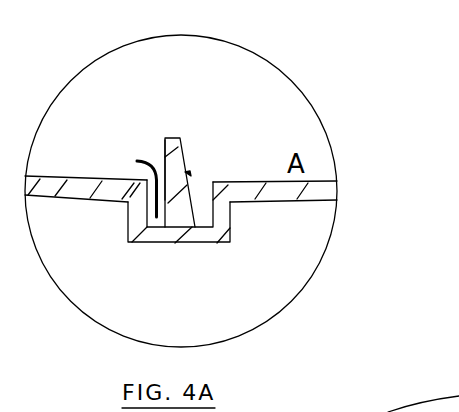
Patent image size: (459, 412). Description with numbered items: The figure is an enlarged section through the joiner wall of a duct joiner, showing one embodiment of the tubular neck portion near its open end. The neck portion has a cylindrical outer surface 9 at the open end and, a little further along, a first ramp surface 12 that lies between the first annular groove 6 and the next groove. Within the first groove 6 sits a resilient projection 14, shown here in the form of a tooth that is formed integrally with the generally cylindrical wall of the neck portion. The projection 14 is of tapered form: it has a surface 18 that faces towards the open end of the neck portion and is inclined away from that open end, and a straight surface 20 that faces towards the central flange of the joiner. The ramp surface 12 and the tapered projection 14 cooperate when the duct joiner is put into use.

The first ramp surface 12 is at (59, 175).
The cylindrical outer surface 9 is at (272, 180).
The resilient projection 14 is at (167, 133).
The straight surface 20 is at (165, 153).
The inclined surface 18 is at (189, 172).
The first annular groove 6 is at (130, 180).